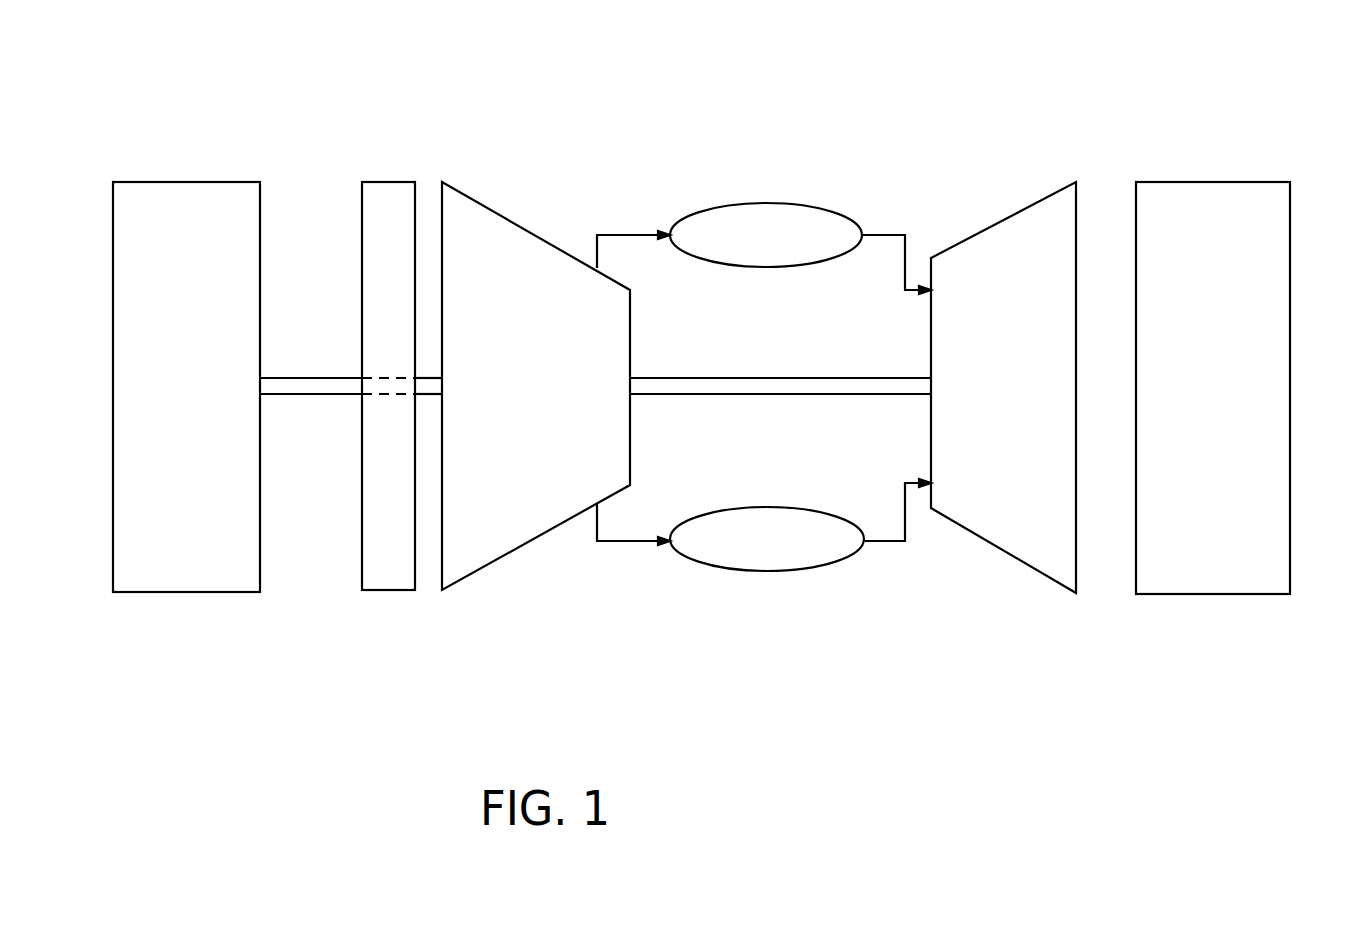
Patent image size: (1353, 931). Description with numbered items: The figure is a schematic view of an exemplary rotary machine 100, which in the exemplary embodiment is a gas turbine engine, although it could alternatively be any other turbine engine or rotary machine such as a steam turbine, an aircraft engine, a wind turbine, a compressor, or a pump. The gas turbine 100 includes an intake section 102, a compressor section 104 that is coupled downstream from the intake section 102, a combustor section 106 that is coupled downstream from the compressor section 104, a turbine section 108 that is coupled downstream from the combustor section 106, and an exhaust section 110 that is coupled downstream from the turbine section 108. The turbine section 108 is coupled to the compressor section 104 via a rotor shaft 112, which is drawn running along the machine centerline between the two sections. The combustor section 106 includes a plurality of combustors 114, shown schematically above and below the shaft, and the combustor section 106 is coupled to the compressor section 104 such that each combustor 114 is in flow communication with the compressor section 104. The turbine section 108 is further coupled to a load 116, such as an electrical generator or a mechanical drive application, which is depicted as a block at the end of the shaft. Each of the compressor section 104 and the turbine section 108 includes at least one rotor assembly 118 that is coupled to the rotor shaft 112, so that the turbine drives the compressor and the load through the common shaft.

The rotary machine 100 is at (912, 110).
The intake section 102 is at (385, 182).
The compressor section 104 is at (468, 195).
The combustor section 106 is at (807, 190).
The turbine section 108 is at (1040, 205).
The exhaust section 110 is at (1208, 182).
The rotor shaft 112 is at (762, 394).
The combustor 114 is at (789, 248).
The load 116 is at (188, 182).
The rotor assembly 118 is at (538, 222).